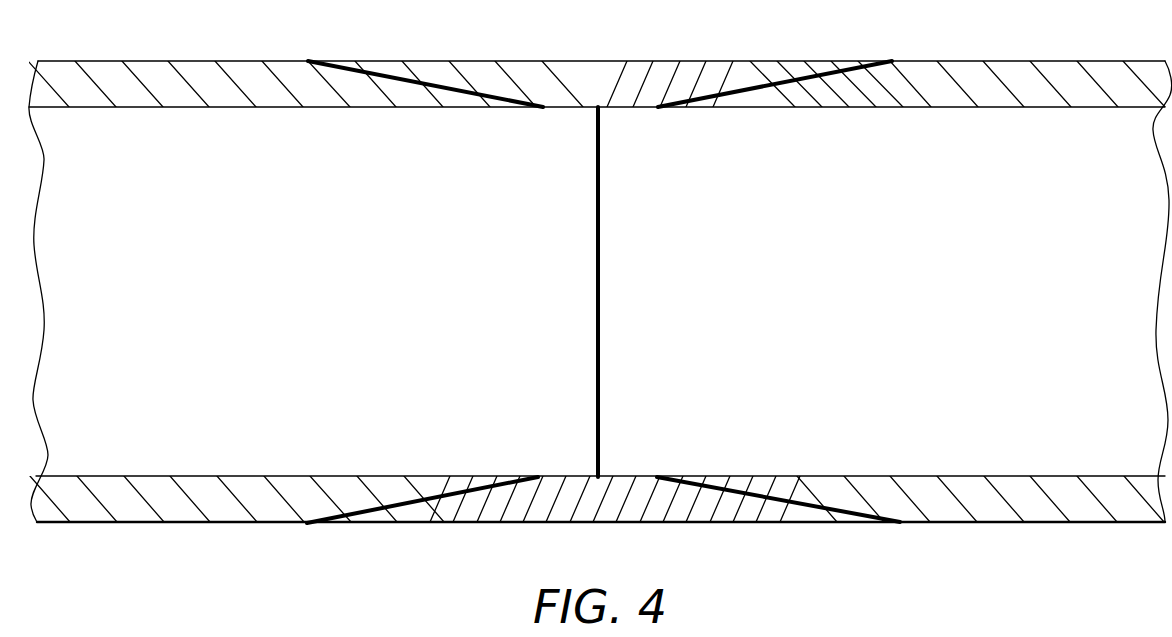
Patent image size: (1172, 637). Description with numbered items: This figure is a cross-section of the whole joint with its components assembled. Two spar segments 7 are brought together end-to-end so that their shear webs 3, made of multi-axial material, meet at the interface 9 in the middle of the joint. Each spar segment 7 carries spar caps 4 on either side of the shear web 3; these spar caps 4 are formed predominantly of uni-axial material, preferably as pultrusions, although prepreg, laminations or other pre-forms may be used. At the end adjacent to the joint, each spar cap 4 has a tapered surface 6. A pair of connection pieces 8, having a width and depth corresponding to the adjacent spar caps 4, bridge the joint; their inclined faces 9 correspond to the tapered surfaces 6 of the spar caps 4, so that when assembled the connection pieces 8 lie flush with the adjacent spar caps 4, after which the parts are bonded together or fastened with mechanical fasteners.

The shear web 3 is at (273, 427).
The spar cap 4 is at (188, 75).
The tapered surface 6 is at (435, 80).
The spar segment 7 is at (311, 302).
The connection piece 8 is at (600, 62).
The inclined face 9 is at (603, 292).